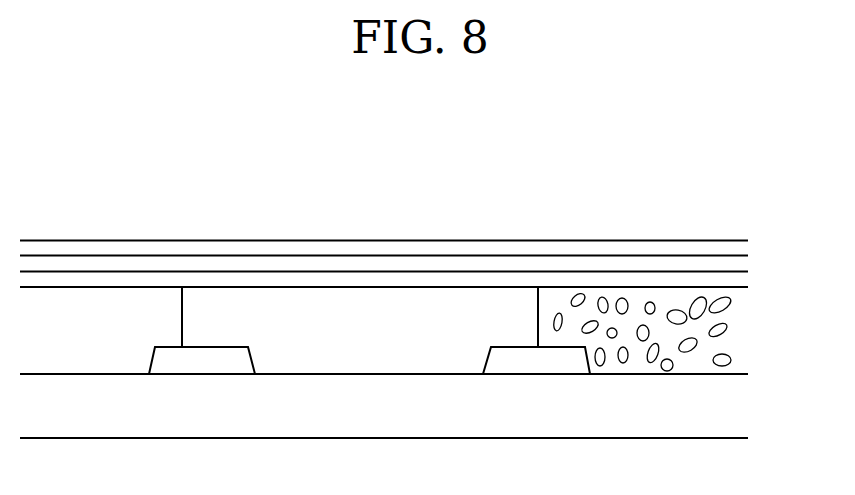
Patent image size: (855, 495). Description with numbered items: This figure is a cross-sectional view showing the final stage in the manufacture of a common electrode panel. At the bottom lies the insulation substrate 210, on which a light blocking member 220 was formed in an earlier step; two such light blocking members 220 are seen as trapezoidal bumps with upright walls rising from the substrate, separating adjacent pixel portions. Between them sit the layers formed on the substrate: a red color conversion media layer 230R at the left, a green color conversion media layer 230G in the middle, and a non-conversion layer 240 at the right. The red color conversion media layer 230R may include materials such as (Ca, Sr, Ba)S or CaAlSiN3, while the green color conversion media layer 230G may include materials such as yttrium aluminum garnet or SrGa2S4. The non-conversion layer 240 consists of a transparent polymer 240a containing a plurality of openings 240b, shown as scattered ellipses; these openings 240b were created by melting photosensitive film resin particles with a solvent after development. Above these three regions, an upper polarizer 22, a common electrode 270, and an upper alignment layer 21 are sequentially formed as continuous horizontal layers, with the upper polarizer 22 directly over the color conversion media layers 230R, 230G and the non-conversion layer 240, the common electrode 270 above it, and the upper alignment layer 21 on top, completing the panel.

The upper alignment layer 21 is at (735, 247).
The common electrode 270 is at (735, 263).
The upper polarizer 22 is at (735, 279).
The insulation substrate 210 is at (735, 405).
The light blocking member 220 is at (222, 356).
The red color conversion media layer 230R is at (133, 317).
The green color conversion media layer 230G is at (437, 317).
The non-conversion layer 240 is at (697, 185).
The openings 240b is at (622, 300).
The transparent polymer 240a is at (672, 300).